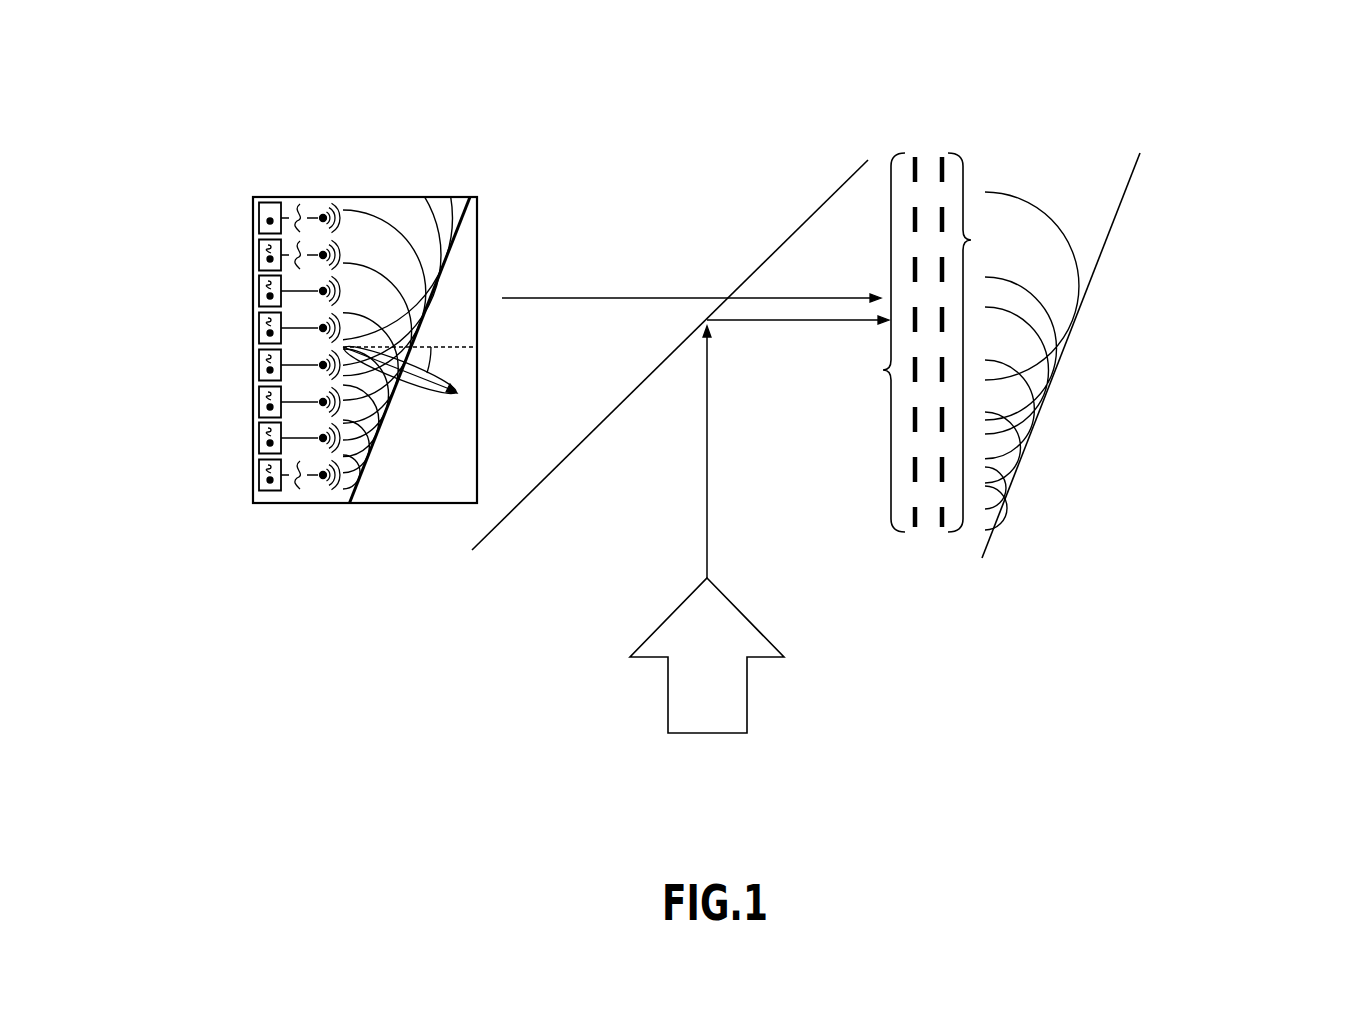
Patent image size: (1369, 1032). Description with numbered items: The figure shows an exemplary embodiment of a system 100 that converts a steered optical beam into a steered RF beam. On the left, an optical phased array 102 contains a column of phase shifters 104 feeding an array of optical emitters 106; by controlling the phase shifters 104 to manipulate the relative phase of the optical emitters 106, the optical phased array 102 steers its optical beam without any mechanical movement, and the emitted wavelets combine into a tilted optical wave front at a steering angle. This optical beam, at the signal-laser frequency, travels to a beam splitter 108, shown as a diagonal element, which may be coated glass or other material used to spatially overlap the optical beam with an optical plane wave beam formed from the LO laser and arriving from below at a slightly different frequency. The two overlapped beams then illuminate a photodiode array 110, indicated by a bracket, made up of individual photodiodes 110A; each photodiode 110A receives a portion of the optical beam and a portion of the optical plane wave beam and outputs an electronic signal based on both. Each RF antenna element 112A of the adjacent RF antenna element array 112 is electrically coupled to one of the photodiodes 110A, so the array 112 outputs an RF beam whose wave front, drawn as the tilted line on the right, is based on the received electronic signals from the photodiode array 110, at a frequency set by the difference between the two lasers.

The system 100 is at (235, 66).
The optical phased array 102 is at (253, 256).
The phase shifters 104 is at (265, 202).
The optical emitters 106 is at (322, 212).
The beam splitter 108 is at (840, 183).
The photodiode array 110 is at (898, 300).
The photodiode 110A is at (917, 156).
The RF antenna element array 112 is at (1109, 384).
The RF antenna element 112A is at (941, 528).